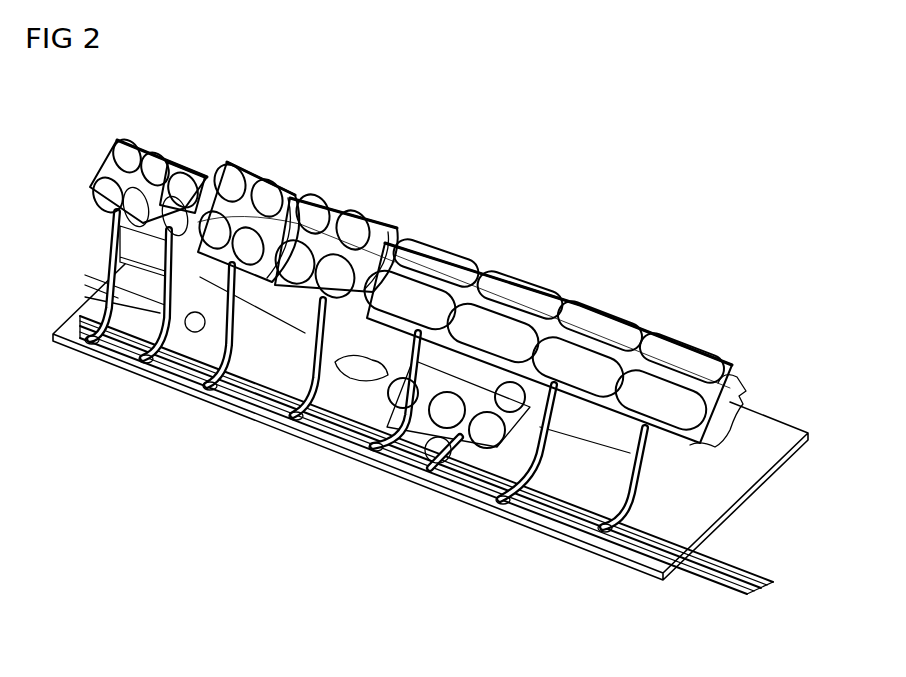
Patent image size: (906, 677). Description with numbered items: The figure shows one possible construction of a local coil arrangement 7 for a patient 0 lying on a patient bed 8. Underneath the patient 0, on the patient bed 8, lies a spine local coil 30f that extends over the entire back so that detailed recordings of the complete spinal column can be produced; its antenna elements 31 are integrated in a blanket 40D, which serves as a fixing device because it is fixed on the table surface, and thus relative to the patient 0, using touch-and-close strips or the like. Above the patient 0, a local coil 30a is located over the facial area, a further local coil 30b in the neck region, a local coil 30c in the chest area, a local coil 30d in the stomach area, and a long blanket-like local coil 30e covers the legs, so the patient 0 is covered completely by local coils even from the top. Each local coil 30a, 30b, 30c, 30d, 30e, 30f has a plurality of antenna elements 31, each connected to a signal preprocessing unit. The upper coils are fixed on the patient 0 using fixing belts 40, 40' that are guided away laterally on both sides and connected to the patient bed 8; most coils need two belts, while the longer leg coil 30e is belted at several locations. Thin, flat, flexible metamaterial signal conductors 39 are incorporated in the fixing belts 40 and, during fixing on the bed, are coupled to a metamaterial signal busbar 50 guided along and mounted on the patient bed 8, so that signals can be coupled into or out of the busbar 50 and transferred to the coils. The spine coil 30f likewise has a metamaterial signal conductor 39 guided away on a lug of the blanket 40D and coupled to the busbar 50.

The patient 0 is at (745, 400).
The local coil arrangement 7 is at (484, 171).
The patient bed 8 is at (737, 483).
The local coil 30a is at (96, 168).
The local coil 30b is at (168, 162).
The local coil 30c is at (260, 170).
The local coil 30d is at (343, 210).
The leg local coil 30e is at (560, 297).
The spine local coil 30f is at (470, 400).
The antenna element 31 is at (130, 152).
The metamaterial signal conductor 39 is at (118, 284).
The fixing belt 40 is at (339, 400).
The fixing belt 40' is at (431, 446).
The blanket 40D is at (425, 472).
The metamaterial signal busbar 50 is at (713, 572).